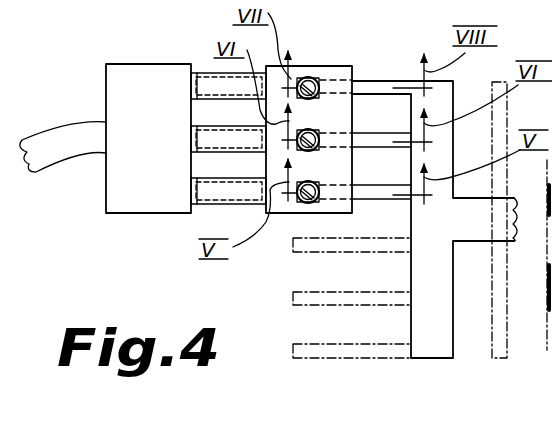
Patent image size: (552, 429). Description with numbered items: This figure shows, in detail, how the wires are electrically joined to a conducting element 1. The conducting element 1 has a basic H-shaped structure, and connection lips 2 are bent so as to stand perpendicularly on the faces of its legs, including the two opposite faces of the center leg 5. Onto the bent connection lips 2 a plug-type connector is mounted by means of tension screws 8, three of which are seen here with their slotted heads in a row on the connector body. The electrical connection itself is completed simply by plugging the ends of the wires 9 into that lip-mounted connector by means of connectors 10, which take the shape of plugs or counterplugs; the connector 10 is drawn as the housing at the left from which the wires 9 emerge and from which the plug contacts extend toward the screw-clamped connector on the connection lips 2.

The conducting element 1 is at (403, 377).
The connection lip 2 is at (372, 138).
The center leg 5 is at (486, 228).
The tension screw 8 is at (318, 80).
The wire 9 is at (50, 137).
The connector 10 is at (147, 202).